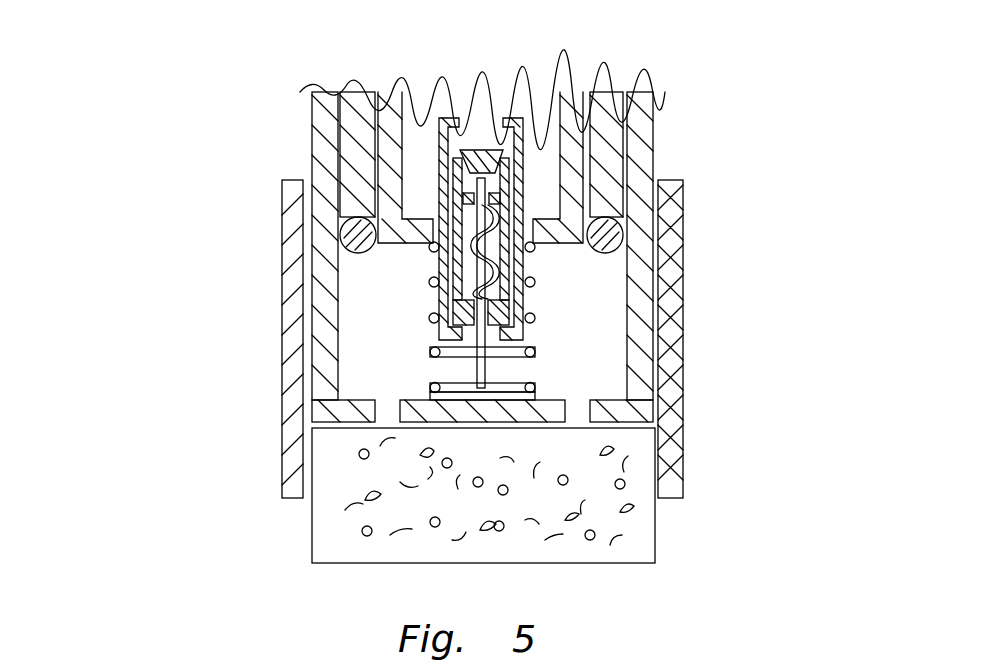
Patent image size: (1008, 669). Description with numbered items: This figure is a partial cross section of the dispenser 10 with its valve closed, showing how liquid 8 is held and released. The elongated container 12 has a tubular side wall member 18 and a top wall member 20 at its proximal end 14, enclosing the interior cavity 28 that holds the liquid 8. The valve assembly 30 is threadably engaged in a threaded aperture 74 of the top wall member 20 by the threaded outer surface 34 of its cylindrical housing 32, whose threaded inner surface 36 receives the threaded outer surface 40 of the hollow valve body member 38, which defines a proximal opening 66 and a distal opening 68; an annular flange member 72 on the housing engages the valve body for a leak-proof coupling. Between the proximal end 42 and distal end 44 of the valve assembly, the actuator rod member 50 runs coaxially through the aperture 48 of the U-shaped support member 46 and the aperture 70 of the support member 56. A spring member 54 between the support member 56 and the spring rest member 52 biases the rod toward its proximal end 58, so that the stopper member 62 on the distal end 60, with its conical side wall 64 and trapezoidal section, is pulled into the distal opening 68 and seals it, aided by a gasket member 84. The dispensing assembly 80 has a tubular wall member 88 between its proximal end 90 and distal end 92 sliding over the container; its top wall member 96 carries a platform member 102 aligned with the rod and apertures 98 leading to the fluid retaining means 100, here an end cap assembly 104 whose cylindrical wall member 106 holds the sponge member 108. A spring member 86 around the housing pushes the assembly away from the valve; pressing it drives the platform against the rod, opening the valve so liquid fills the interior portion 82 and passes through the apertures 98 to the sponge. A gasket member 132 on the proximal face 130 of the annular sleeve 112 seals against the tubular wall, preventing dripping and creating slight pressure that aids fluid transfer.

The liquid 8 is at (415, 112).
The dispenser 10 is at (757, 163).
The elongated container 12 is at (590, 162).
The proximal end 14 is at (658, 208).
The side wall member 18 is at (580, 135).
The top wall member 20 is at (628, 258).
The interior cavity 28 is at (437, 81).
The valve assembly 30 is at (553, 293).
The cylindrical housing 32 is at (440, 322).
The threaded outer surface 34 is at (665, 190).
The threaded inner surface 36 is at (489, 148).
The valve body member 38 is at (475, 212).
The threaded outer surface 40 is at (540, 345).
The proximal end 42 is at (550, 370).
The distal end 44 is at (533, 143).
The U-shaped support member 46 is at (480, 366).
The aperture 48 is at (436, 330).
The actuator rod member 50 is at (483, 360).
The spring rest member 52 is at (528, 303).
The spring member 54 is at (526, 268).
The support member 56 is at (470, 215).
The proximal end 58 is at (308, 412).
The distal end 60 is at (462, 200).
The stopper member 62 is at (472, 156).
The conical side wall 64 is at (400, 185).
The proximal opening 66 is at (535, 325).
The distal opening 68 is at (427, 118).
The aperture 70 is at (430, 270).
The annular flange member 72 is at (452, 150).
The threaded aperture 74 is at (350, 215).
The dispensing assembly 80 is at (190, 330).
The interior portion 82 is at (365, 322).
The gasket member 84 is at (645, 130).
The spring member 86 is at (360, 306).
The tubular wall member 88 is at (435, 340).
The proximal end 90 is at (710, 420).
The distal end 92 is at (165, 5).
The top wall member 96 is at (612, 410).
The apertures 98 is at (378, 425).
The fluid retaining means 100 is at (588, 572).
The platform member 102 is at (463, 396).
The end cap assembly 104 is at (778, 463).
The cylindrical wall member 106 is at (684, 443).
The sponge member 108 is at (618, 533).
The annular sleeve 112 is at (345, 140).
The proximal face 130 is at (380, 233).
The gasket member 132 is at (282, 237).